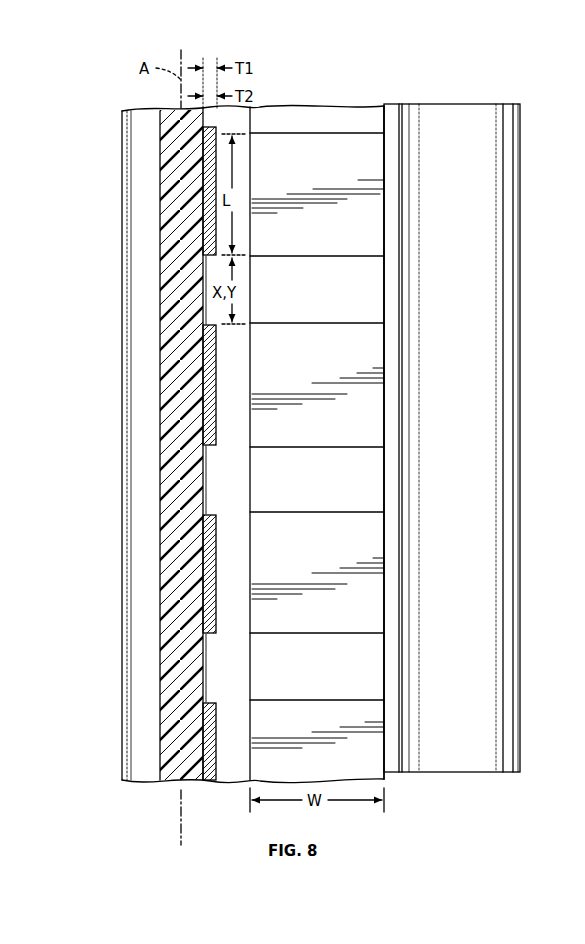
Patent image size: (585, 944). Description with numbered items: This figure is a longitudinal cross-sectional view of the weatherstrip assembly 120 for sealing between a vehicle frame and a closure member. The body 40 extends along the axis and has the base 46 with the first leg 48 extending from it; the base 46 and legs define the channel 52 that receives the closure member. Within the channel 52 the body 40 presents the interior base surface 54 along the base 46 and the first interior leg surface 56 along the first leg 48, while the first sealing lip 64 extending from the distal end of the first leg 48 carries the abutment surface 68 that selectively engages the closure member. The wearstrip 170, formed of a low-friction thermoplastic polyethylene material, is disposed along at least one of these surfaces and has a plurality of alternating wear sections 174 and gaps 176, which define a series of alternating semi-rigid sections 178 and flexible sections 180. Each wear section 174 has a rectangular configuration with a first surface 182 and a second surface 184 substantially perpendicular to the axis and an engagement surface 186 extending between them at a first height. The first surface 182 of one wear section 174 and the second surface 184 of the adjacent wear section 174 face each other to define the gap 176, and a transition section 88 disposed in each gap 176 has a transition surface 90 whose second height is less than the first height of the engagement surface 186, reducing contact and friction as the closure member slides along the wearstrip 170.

The body 40 is at (160, 118).
The base 46 is at (171, 763).
The first leg 48 is at (400, 130).
The channel 52 is at (385, 126).
The interior base surface 54 is at (168, 470).
The first interior leg surface 56 is at (390, 765).
The first sealing lip 64 is at (486, 122).
The abutment surface 68 is at (510, 420).
The transition section 88 is at (203, 284).
The transition surface 90 is at (380, 310).
The weatherstrip assembly 120 is at (520, 100).
The wearstrip 170 is at (162, 206).
The wear section 174 is at (200, 229).
The gap 176 is at (385, 282).
The semi-rigid section 178 is at (183, 180).
The flexible section 180 is at (247, 324).
The first surface 182 is at (203, 263).
The second surface 184 is at (198, 163).
The engagement surface 186 is at (203, 215).